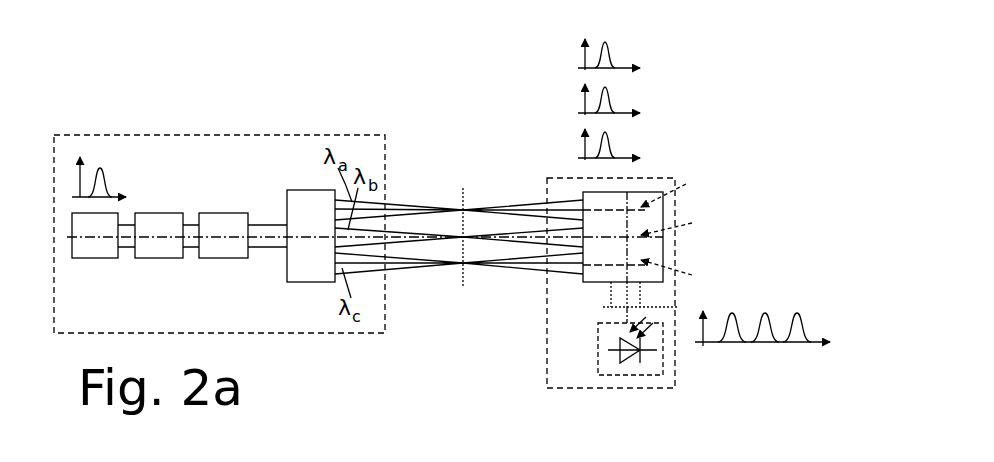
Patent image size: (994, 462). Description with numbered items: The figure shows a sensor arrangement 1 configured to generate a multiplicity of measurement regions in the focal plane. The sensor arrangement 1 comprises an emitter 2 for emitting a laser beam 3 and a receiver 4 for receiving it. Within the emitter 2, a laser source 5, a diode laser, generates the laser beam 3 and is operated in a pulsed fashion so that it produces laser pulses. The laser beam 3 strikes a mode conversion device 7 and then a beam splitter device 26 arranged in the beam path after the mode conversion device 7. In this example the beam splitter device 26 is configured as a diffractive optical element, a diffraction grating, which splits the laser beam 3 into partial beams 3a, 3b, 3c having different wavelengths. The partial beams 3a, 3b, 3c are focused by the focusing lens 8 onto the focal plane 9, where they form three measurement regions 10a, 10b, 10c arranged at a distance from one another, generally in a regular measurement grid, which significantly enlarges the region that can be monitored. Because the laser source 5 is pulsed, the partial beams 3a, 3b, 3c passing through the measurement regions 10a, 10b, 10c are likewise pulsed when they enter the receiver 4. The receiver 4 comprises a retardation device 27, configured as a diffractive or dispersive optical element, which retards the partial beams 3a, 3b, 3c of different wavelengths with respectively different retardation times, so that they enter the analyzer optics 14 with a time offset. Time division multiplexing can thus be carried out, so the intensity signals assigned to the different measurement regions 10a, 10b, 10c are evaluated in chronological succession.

The sensor arrangement 1 is at (136, 106).
The emitter 2 is at (237, 133).
The laser beam 3 is at (125, 250).
The laser source 5 is at (82, 250).
The mode conversion device 7 is at (167, 250).
The beam splitter device 26 is at (225, 250).
The focusing lens 8 is at (312, 268).
The first partial beam 3a is at (384, 199).
The second partial beam 3b is at (381, 242).
The third partial beam 3c is at (372, 270).
The focal plane 9 is at (461, 191).
The first measurement region 10a is at (468, 209).
The second measurement region 10b is at (468, 236).
The third measurement region 10c is at (466, 265).
The receiver 4 is at (660, 177).
The retardation device 27 is at (655, 246).
The analyzer optics 14 is at (665, 368).